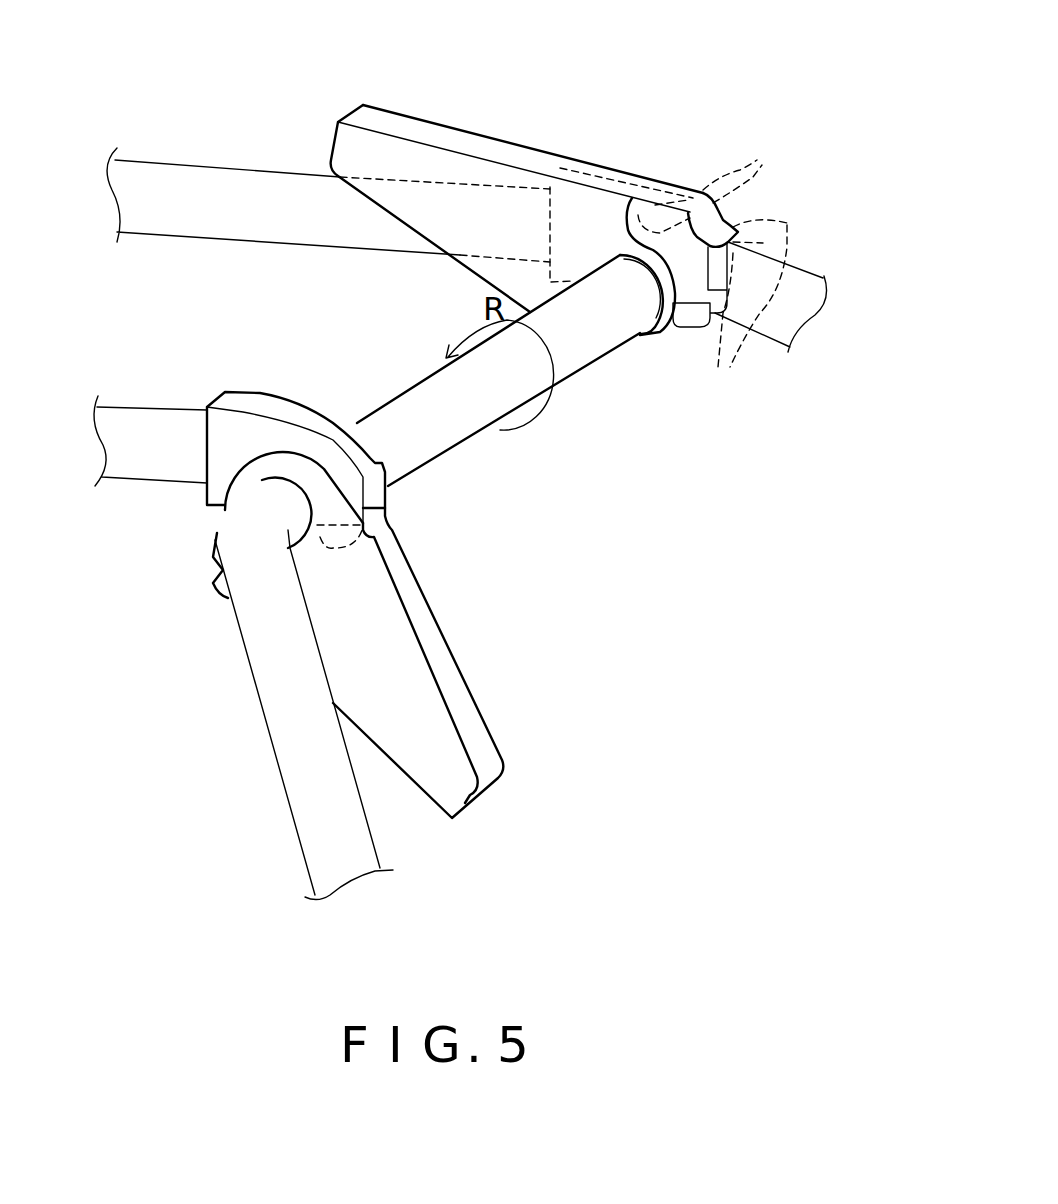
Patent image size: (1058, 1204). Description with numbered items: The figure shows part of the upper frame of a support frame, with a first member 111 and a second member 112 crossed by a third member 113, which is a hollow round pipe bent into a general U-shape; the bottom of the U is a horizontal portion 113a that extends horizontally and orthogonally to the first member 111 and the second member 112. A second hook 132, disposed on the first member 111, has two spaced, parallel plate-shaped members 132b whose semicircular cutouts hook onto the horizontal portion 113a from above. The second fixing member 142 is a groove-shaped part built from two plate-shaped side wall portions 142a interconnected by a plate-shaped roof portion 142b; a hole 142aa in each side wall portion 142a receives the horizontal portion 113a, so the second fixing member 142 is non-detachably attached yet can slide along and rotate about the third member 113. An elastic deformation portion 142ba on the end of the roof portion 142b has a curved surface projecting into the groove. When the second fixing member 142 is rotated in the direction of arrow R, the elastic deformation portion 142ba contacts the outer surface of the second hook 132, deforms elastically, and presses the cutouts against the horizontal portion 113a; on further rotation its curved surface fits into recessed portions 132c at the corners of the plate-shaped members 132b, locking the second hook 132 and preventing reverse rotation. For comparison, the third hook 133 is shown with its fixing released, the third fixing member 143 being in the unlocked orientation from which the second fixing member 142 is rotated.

The first member 111 is at (227, 170).
The second member 112 is at (158, 406).
The third member 113 is at (778, 361).
The horizontal portion 113a is at (387, 403).
The second hook 132 is at (600, 164).
The plate-shaped member 132b is at (755, 165).
The recessed portion 132c is at (732, 314).
The third hook 133 is at (313, 388).
The second fixing member 142 is at (562, 213).
The side wall portion 142a is at (357, 147).
The roof portion 142b is at (417, 132).
The hole 142aa is at (655, 290).
The elastic deformation portion 142ba is at (716, 245).
The third fixing member 143 is at (487, 830).